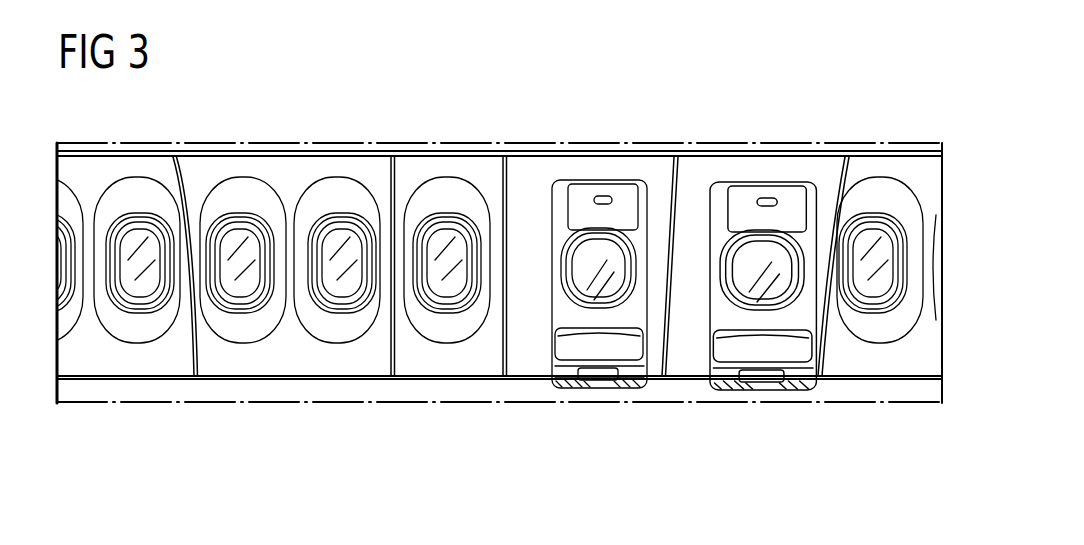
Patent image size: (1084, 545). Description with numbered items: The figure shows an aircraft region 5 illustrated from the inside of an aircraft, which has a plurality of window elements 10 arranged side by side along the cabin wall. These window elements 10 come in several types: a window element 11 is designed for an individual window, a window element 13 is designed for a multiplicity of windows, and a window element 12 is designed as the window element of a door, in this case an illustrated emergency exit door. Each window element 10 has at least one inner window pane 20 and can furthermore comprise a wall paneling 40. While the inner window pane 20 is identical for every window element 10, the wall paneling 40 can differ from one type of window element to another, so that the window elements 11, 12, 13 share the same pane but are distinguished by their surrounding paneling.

The aircraft region 5 is at (853, 418).
The window element 10 is at (515, 394).
The window element for an individual window 11 is at (473, 145).
The window element of a door 12 is at (561, 147).
The window element for a multiplicity of windows 13 is at (291, 143).
The inner window pane 20 is at (252, 276).
The wall paneling 40 is at (649, 190).